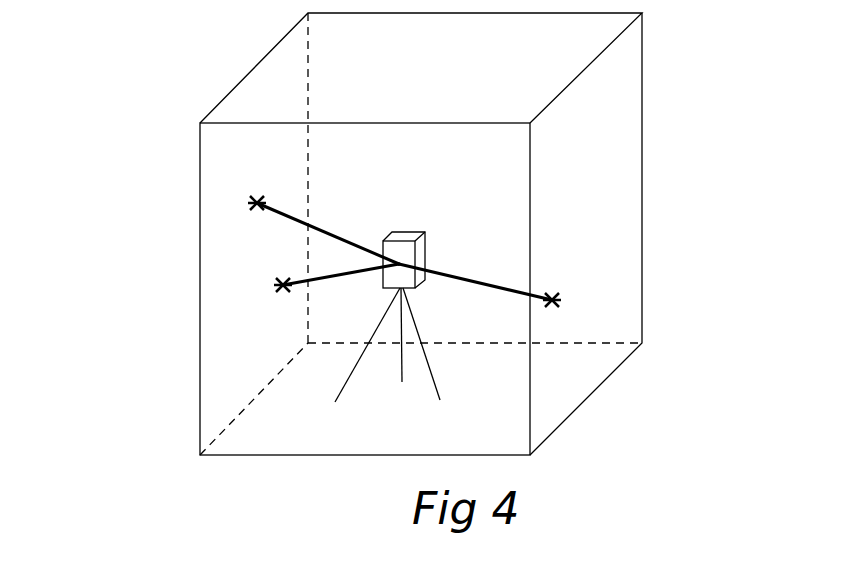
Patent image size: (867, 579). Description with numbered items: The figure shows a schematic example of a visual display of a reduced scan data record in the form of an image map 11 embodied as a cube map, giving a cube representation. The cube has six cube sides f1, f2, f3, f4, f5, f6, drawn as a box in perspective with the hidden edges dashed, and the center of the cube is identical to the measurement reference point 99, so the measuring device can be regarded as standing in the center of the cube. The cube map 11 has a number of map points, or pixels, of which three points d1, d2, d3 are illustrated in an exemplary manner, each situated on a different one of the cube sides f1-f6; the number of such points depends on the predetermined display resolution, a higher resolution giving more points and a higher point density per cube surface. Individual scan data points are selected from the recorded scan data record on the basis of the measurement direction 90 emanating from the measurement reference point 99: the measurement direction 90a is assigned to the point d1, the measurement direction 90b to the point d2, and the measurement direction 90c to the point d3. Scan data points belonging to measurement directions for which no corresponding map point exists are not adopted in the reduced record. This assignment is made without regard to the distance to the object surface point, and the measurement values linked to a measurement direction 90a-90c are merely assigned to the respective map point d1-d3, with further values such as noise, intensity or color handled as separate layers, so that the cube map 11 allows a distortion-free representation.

The image map 11 is at (461, 234).
The cube side f1 is at (254, 234).
The cube side f2 is at (365, 289).
The cube side f3 is at (586, 234).
The cube side f4 is at (421, 68).
The cube side f5 is at (441, 393).
The cube side f6 is at (509, 99).
The measurement direction 90 is at (438, 221).
The measurement reference point 99 is at (401, 263).
The measurement direction 90a is at (352, 212).
The measurement direction 90b is at (362, 353).
The measurement direction 90c is at (535, 350).
The map point d1 is at (250, 203).
The map point d2 is at (188, 308).
The map point d3 is at (622, 264).